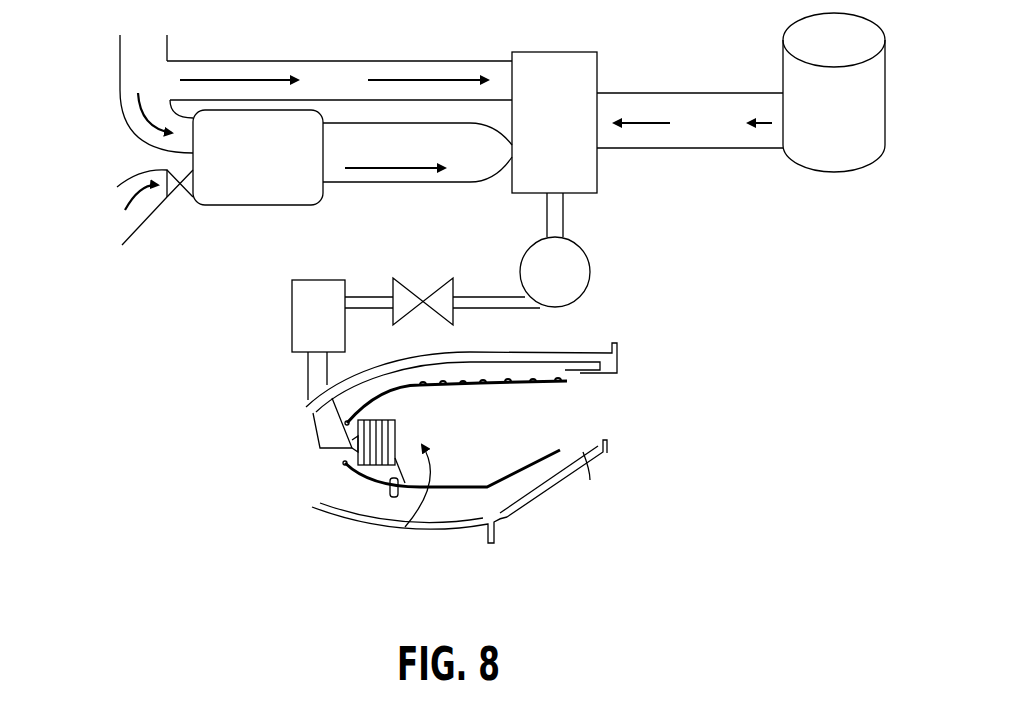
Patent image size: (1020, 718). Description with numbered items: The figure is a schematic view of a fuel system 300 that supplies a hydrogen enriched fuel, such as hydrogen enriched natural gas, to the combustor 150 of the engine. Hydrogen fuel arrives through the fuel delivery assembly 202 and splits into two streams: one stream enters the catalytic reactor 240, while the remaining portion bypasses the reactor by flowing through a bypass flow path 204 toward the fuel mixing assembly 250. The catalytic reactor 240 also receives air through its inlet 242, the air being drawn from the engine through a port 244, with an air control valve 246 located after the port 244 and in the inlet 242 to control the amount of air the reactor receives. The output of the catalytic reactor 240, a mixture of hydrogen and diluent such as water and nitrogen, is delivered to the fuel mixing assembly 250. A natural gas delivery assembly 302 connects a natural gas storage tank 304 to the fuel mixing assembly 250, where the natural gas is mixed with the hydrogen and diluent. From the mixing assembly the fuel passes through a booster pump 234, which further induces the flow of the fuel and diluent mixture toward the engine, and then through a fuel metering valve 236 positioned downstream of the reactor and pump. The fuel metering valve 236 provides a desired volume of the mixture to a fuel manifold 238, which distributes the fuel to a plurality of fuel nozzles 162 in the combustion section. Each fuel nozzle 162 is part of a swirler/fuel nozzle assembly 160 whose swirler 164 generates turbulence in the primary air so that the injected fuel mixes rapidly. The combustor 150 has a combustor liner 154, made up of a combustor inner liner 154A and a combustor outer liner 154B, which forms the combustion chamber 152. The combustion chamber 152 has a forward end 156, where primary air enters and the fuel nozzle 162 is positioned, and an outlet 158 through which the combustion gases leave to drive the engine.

The combustor 150 is at (598, 523).
The combustion chamber 152 is at (488, 448).
The combustor liner 154 is at (513, 507).
The combustor inner liner 154A is at (420, 488).
The combustor outer liner 154B is at (560, 362).
The forward end 156 is at (435, 490).
The outlet 158 is at (592, 404).
The swirler/fuel nozzle assembly 160 is at (352, 575).
The fuel nozzle 162 is at (330, 457).
The swirler 164 is at (350, 467).
The fuel delivery assembly 202 is at (118, 72).
The bypass flow path 204 is at (428, 67).
The booster pump 234 is at (585, 267).
The fuel metering valve 236 is at (443, 303).
The fuel manifold 238 is at (292, 308).
The catalytic reactor 240 is at (285, 205).
The inlet 242 is at (122, 245).
The port 244 is at (112, 196).
The air control valve 246 is at (188, 203).
The fuel mixing assembly 250 is at (553, 60).
The fuel system 300 is at (750, 300).
The natural gas delivery assembly 302 is at (687, 148).
The natural gas storage tank 304 is at (838, 163).